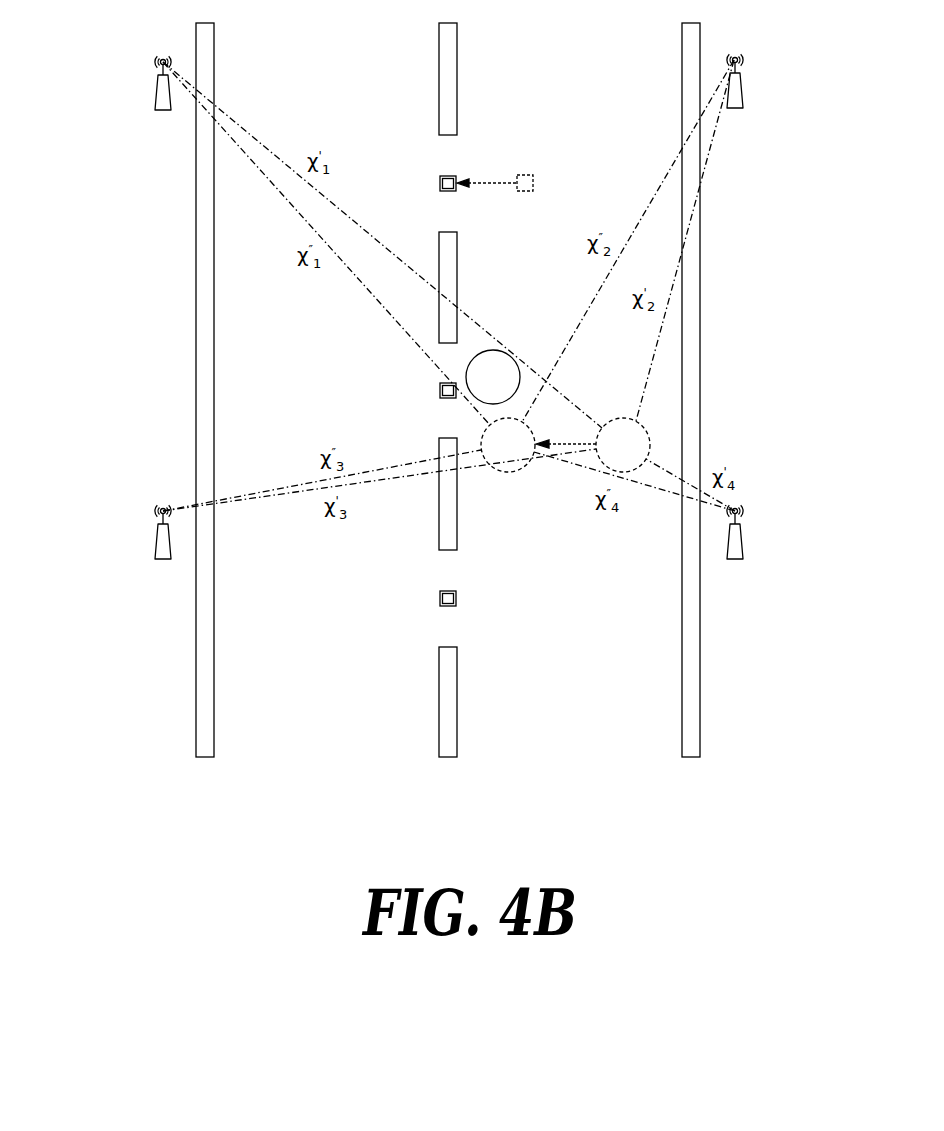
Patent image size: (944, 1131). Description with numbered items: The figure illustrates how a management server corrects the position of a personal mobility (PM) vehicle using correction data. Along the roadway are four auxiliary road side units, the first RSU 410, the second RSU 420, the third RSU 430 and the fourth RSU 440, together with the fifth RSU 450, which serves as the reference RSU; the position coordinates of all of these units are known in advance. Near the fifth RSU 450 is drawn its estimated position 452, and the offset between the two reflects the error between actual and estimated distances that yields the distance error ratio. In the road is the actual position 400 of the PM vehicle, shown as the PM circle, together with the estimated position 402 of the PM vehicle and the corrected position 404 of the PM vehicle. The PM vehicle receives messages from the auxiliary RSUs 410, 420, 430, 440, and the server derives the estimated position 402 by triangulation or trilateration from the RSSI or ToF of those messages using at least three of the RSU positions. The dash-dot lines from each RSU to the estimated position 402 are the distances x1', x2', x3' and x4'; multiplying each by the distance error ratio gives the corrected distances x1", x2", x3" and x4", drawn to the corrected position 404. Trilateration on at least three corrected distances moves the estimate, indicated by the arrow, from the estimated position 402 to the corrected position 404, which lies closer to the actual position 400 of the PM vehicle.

The actual position of PM vehicle 400 is at (489, 349).
The estimated position of PM vehicle 402 is at (620, 417).
The corrected position of PM vehicle 404 is at (510, 473).
The first RSU 410 is at (156, 100).
The second RSU 420 is at (743, 100).
The third RSU 430 is at (156, 553).
The fourth RSU 440 is at (743, 553).
The fifth RSU 450 is at (438, 176).
The estimated position of fifth RSU 452 is at (535, 186).